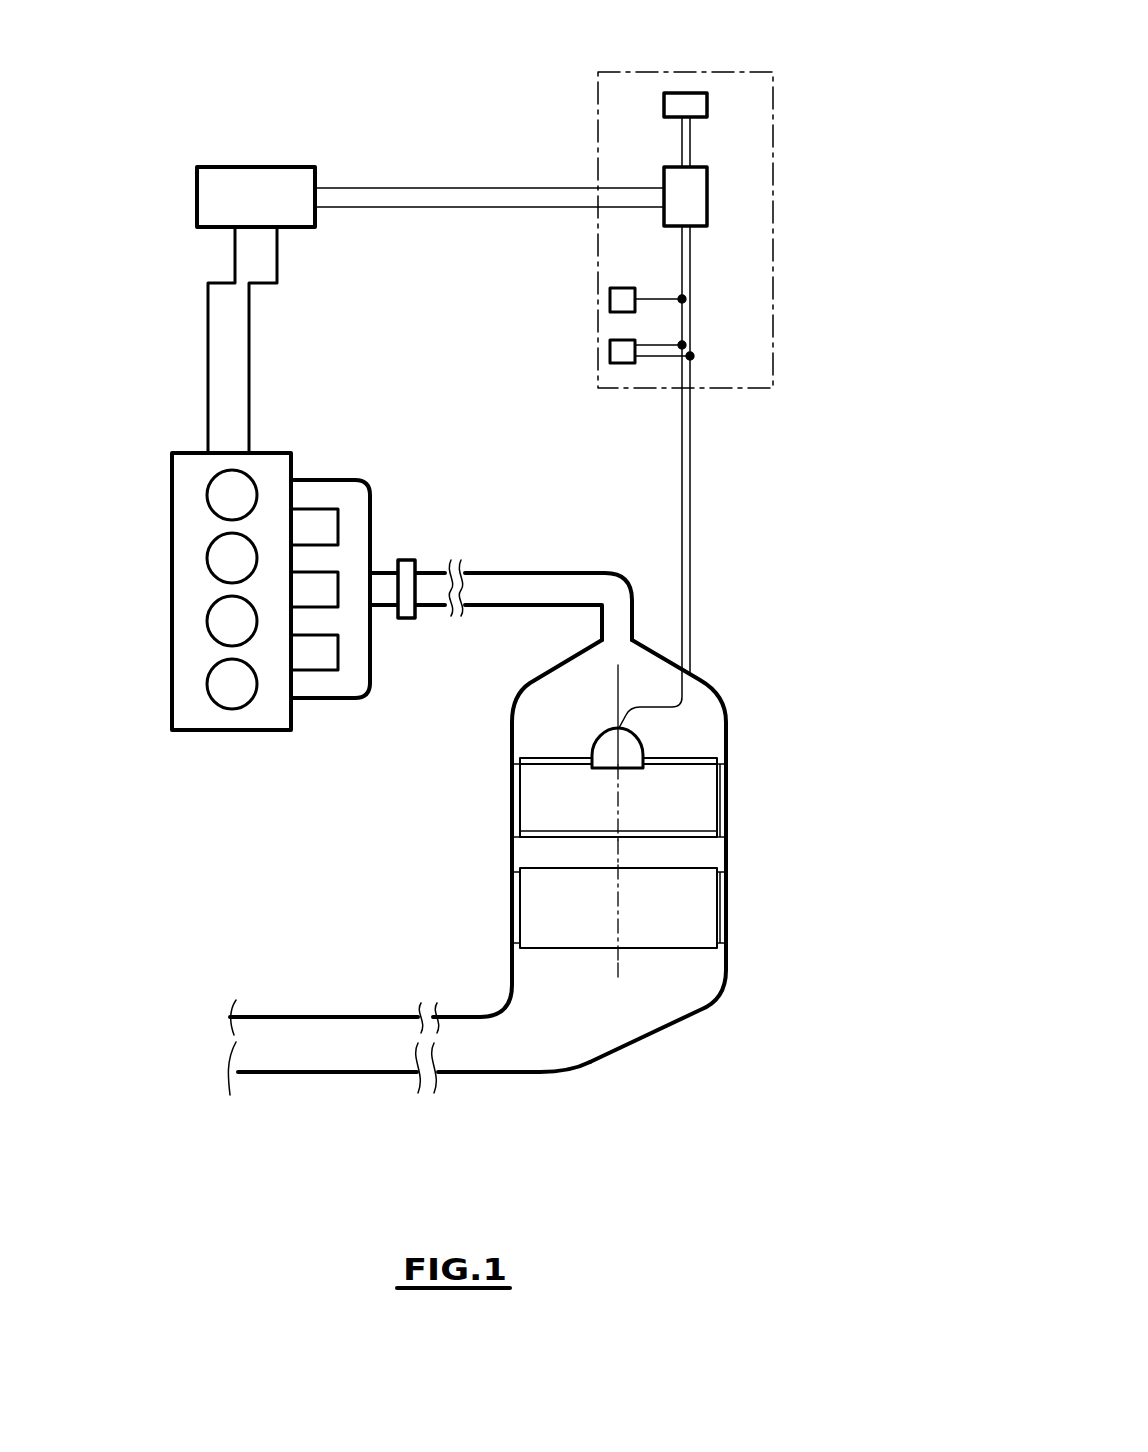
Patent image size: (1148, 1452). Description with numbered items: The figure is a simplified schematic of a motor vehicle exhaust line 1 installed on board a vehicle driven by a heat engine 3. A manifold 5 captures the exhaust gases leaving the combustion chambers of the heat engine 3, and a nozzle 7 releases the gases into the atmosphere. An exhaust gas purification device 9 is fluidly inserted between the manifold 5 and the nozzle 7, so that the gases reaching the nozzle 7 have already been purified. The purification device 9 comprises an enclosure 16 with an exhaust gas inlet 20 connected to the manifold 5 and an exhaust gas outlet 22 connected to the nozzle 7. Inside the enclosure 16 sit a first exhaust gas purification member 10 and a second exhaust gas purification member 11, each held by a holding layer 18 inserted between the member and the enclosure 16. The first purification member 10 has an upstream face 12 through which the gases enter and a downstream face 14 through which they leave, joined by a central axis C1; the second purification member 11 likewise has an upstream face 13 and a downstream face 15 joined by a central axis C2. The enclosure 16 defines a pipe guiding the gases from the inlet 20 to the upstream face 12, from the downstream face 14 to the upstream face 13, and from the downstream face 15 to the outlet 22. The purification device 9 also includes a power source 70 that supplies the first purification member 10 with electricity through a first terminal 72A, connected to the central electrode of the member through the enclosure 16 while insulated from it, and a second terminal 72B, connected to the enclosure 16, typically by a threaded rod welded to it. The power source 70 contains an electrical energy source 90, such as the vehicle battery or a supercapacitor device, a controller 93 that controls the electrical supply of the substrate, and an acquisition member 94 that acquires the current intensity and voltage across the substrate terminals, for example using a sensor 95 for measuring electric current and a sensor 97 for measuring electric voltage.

The exhaust line 1 is at (669, 816).
The heat engine 3 is at (187, 553).
The manifold 5 is at (353, 527).
The nozzle 7 is at (288, 1035).
The exhaust gas purification device 9 is at (750, 953).
The first exhaust gas purification member 10 is at (690, 808).
The second exhaust gas purification member 11 is at (683, 920).
The upstream face 12 is at (697, 758).
The upstream face 13 is at (540, 865).
The downstream face 14 is at (697, 840).
The downstream face 15 is at (560, 950).
The enclosure 16 is at (512, 862).
The holding layer 18 is at (720, 825).
The exhaust gas inlet 20 is at (602, 625).
The exhaust gas outlet 22 is at (468, 1050).
The power source 70 is at (603, 203).
The first terminal 72A is at (681, 420).
The second terminal 72B is at (691, 425).
The electrical energy source 90 is at (687, 100).
The controller 93 is at (698, 206).
The acquisition member 94 is at (586, 297).
The sensor for measuring electric current 95 is at (622, 300).
The sensor for measuring electric voltage 97 is at (616, 350).
The central axis C1 is at (619, 685).
The central axis C2 is at (618, 963).